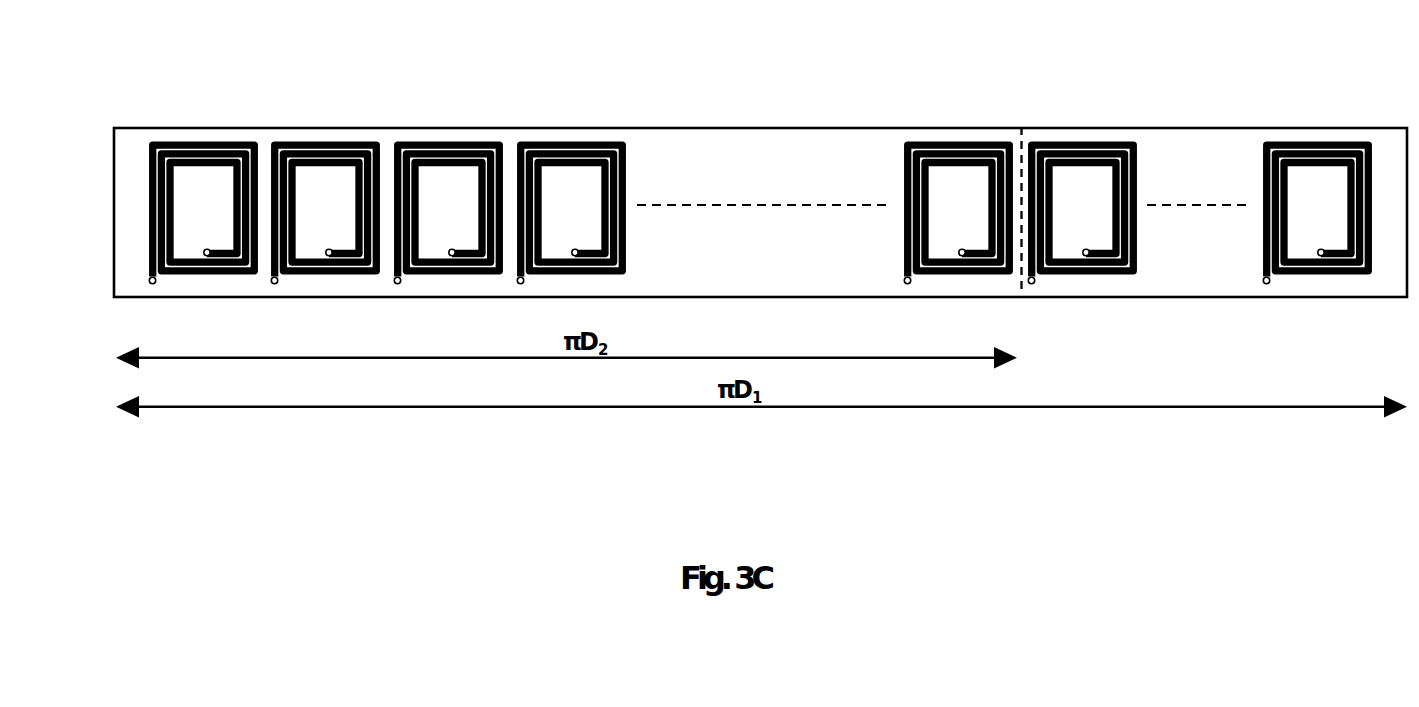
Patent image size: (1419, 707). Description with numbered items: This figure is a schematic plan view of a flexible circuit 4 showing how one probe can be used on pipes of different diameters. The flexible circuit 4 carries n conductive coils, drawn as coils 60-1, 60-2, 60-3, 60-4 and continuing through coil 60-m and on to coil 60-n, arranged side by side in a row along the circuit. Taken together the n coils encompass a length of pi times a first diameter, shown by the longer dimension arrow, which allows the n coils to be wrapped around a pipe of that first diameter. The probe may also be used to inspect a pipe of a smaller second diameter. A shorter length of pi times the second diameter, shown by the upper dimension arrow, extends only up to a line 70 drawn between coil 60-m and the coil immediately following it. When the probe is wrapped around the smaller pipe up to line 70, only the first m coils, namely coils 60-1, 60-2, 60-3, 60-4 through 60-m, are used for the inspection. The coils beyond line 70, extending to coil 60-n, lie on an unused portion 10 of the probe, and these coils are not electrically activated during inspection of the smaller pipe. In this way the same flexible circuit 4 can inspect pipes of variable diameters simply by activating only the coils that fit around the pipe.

The flexible circuit 4 is at (778, 58).
The unused portion 10 is at (1204, 180).
The conductive coil 60-1 is at (202, 146).
The conductive coil 60-2 is at (324, 146).
The conductive coil 60-3 is at (447, 146).
The conductive coil 60-4 is at (570, 146).
The conductive coil 60-m is at (951, 146).
The conductive coil 60-n is at (1313, 146).
The line 70 is at (1019, 129).